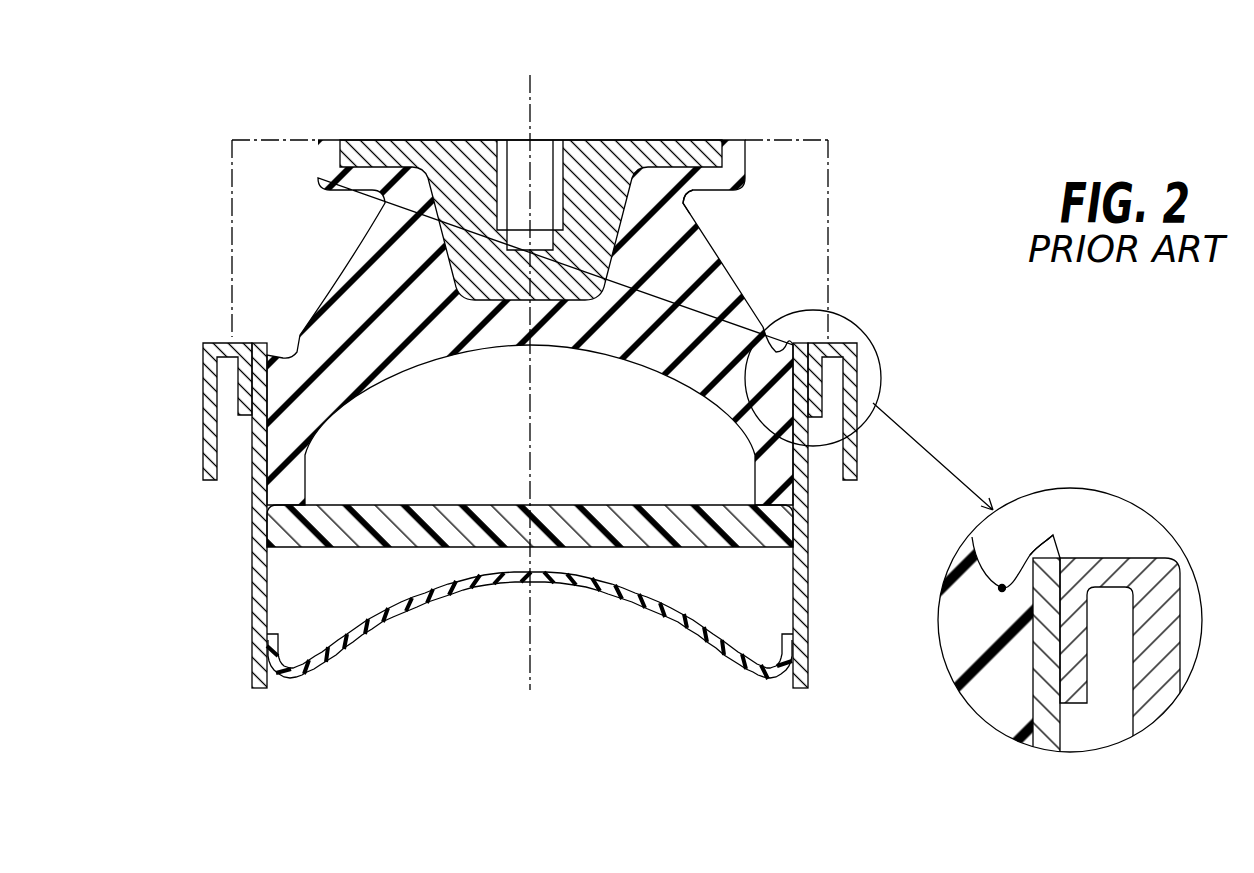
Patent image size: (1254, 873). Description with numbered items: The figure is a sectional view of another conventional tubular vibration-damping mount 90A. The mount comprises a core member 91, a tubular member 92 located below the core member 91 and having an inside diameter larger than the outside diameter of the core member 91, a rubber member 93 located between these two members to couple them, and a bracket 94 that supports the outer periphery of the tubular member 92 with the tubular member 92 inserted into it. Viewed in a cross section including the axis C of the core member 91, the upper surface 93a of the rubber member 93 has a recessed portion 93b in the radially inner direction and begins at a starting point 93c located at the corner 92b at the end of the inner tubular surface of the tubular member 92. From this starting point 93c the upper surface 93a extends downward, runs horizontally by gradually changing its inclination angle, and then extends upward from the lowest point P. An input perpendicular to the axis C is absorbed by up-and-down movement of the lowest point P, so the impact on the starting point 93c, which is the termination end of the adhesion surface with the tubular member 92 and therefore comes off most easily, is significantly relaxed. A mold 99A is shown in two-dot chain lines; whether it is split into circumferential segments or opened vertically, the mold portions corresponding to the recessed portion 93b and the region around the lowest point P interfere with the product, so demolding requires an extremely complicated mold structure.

The tubular vibration-damping mount 90A is at (708, 436).
The core member 91 is at (597, 165).
The tubular member 92 is at (1040, 680).
The corner 92b is at (1113, 491).
The rubber member 93 is at (347, 264).
The upper surface 93a is at (733, 293).
The recessed portion 93b is at (687, 196).
The starting point 93c is at (1053, 535).
The bracket 94 is at (1147, 617).
The mold 99A is at (277, 140).
The axis C is at (532, 100).
The lowest point P is at (1000, 590).